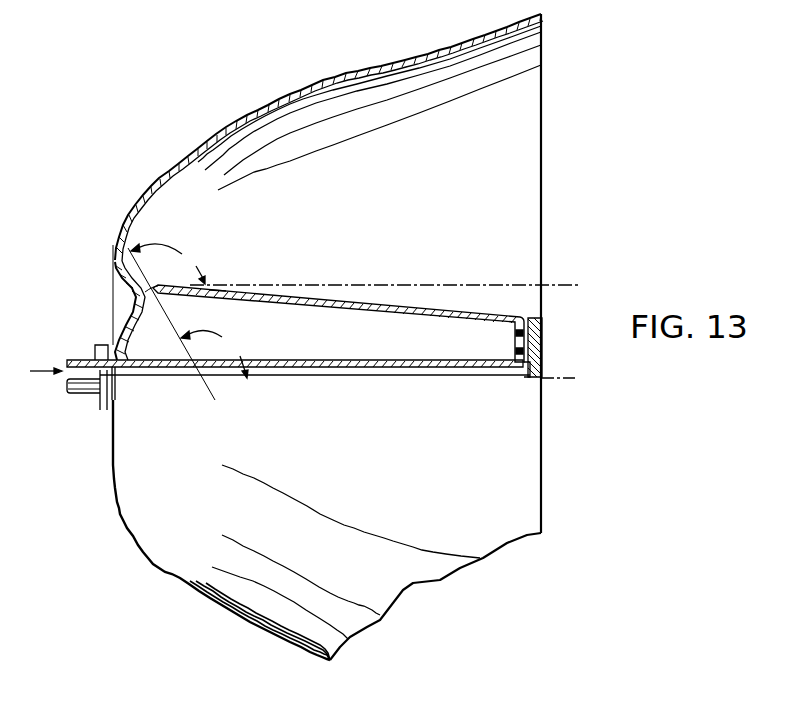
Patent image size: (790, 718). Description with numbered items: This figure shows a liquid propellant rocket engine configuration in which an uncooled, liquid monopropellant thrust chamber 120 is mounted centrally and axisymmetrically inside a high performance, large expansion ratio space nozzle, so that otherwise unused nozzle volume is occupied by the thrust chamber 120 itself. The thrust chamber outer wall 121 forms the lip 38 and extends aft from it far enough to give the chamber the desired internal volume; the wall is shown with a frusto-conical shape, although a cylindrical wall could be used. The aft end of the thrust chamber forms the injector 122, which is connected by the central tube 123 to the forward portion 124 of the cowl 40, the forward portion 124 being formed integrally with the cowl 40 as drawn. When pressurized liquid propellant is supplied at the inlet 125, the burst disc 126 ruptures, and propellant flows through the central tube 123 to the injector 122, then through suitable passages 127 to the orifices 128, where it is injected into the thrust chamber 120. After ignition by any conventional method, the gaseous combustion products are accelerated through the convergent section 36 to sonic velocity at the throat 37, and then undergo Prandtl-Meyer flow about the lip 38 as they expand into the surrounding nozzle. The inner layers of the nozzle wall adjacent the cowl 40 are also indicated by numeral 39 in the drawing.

The convergent section 36 is at (167, 354).
The throat 37 is at (147, 293).
The lip 38 is at (153, 288).
The inner layers of shell 39 is at (163, 178).
The cowl 40 is at (243, 125).
The thrust chamber 120 is at (283, 298).
The thrust chamber outer wall 121 is at (218, 291).
The injector 122 is at (537, 340).
The central tube 123 is at (292, 362).
The forward portion of the cowl 124 is at (112, 348).
The inlet 125 is at (73, 388).
The burst disc 126 is at (113, 372).
The passages 127 is at (526, 358).
The orifices 128 is at (516, 351).